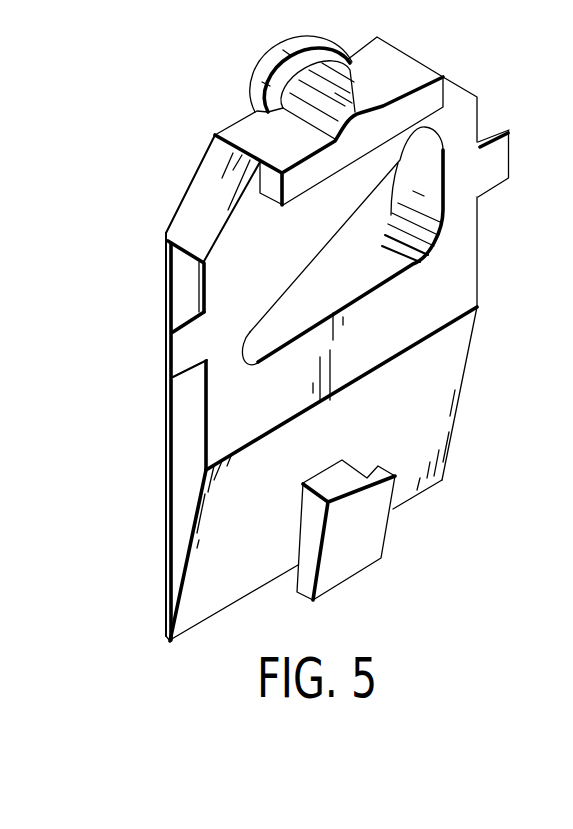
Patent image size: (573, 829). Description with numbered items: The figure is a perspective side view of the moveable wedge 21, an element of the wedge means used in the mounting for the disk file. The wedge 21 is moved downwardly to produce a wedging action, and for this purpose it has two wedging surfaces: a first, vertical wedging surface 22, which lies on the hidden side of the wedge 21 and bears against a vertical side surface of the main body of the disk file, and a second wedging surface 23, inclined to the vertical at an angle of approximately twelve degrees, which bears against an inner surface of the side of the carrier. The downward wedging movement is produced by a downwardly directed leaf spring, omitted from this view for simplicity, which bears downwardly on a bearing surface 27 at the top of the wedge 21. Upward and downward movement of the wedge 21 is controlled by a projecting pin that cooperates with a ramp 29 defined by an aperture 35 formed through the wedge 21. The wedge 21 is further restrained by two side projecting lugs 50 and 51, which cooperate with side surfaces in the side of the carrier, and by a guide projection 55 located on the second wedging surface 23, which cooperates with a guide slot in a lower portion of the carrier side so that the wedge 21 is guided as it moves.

The wedge 21 is at (228, 133).
The first wedging surface 22 is at (166, 496).
The second wedging surface 23 is at (185, 570).
The bearing surface 27 is at (343, 97).
The ramp 29 is at (327, 248).
The aperture 35 is at (447, 248).
The side projecting lug 50 is at (178, 350).
The side projecting lug 51 is at (498, 160).
The guide projection 55 is at (352, 550).